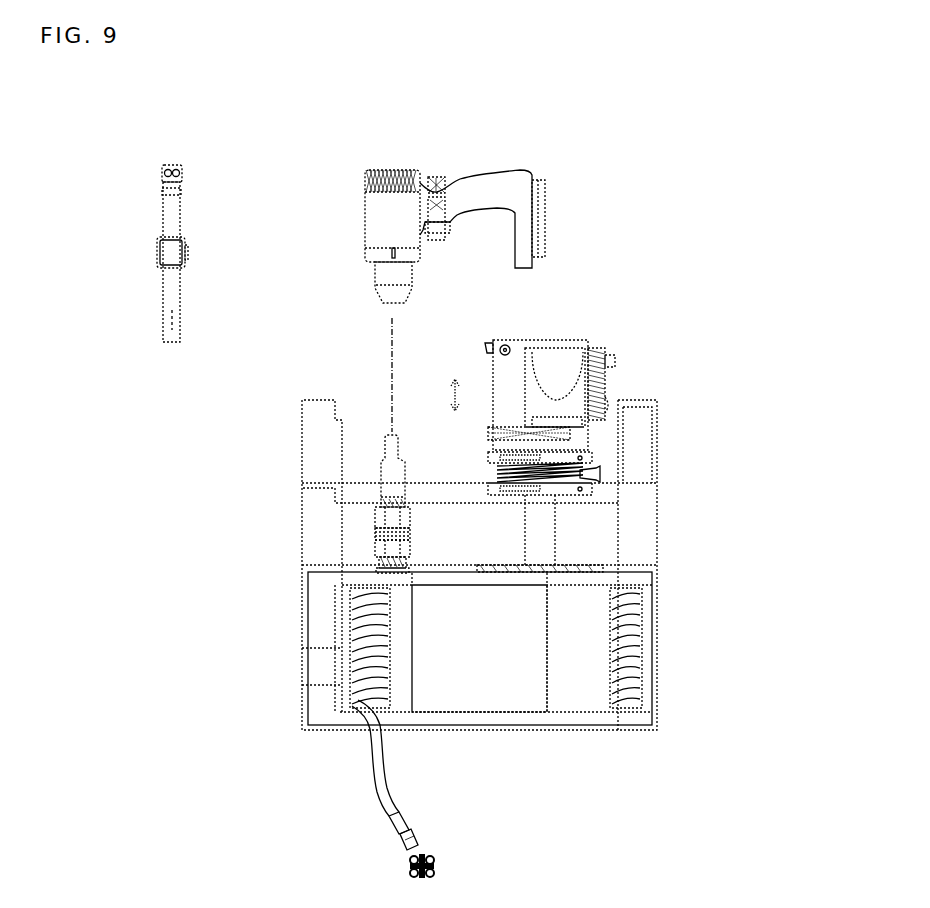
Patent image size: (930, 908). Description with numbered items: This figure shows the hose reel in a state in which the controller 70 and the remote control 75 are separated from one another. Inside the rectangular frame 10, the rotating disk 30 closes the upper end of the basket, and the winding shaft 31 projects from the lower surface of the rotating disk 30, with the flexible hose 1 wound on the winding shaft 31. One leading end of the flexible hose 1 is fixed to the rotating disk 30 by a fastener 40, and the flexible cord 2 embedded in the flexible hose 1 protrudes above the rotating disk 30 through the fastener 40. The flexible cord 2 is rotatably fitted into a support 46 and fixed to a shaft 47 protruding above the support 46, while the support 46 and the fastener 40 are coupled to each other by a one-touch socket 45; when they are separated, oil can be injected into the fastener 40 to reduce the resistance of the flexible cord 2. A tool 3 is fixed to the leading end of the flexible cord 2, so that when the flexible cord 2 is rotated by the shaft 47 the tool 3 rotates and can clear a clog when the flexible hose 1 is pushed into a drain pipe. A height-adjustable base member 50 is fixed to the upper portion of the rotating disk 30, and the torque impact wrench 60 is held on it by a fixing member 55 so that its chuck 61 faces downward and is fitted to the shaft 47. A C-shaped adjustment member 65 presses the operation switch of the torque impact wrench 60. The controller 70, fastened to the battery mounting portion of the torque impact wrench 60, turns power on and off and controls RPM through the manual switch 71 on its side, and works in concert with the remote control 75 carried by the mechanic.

The flexible hose 1 is at (373, 770).
The flexible cord 2 is at (397, 830).
The tool 3 is at (437, 860).
The rectangular frame 10 is at (335, 683).
The rotating disk 30 is at (607, 580).
The winding shaft 31 is at (397, 630).
The fastener 40 is at (285, 505).
The one-touch socket 45 is at (377, 532).
The support 46 is at (387, 478).
The shaft 47 is at (383, 452).
The base member 50 is at (592, 447).
The fixing member 55 is at (535, 355).
The torque impact wrench 60 is at (397, 197).
The chuck 61 is at (388, 293).
The adjustment member 65 is at (440, 182).
The controller 70 is at (620, 317).
The manual switch 71 is at (608, 357).
The remote control 75 is at (175, 253).